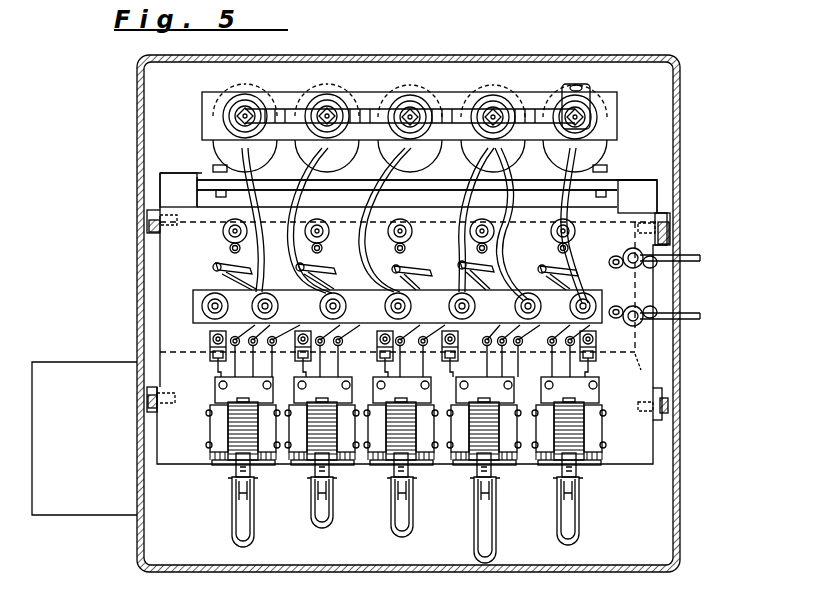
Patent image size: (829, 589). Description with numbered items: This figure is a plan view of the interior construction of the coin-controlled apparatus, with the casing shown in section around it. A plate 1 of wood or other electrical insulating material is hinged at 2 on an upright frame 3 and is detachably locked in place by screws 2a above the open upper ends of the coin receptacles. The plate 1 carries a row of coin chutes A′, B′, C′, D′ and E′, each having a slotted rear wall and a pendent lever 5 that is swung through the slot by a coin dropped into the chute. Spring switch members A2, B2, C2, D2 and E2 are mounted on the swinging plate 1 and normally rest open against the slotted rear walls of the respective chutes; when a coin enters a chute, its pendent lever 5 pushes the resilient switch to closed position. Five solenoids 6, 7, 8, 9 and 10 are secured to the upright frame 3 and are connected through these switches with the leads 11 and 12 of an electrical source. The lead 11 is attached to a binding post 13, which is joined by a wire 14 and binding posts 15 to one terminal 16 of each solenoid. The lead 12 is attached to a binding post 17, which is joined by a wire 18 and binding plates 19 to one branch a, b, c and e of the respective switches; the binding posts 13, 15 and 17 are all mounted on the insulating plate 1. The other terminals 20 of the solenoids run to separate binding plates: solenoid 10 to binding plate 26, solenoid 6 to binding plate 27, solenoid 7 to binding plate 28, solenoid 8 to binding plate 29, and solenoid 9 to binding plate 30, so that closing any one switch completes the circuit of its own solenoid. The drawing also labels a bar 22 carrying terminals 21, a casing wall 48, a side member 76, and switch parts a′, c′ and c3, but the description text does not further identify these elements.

The plate 1 is at (158, 298).
The hinge 2 is at (147, 222).
The screws 2a is at (147, 402).
The upright frame 3 is at (190, 172).
The pendent levers 5 is at (254, 490).
The solenoid 6 is at (422, 95).
The solenoid 7 is at (340, 95).
The solenoid 8 is at (592, 100).
The solenoid 9 is at (258, 94).
The solenoid 10 is at (506, 95).
The lead 11 is at (696, 255).
The lead 12 is at (690, 320).
The binding post 13 is at (633, 268).
The wire 14 is at (622, 222).
The binding posts 15 is at (222, 233).
The terminal 16 is at (250, 170).
The binding post 17 is at (640, 326).
The wire 18 is at (649, 367).
The binding plates 19 is at (210, 344).
The other terminals 20 is at (240, 150).
The terminal 21 is at (385, 312).
The bar 22 is at (200, 290).
The binding plate 26 is at (470, 258).
The binding plate 27 is at (404, 268).
The binding plate 28 is at (330, 264).
The binding plate 29 is at (548, 263).
The binding plate 30 is at (232, 264).
The casing 48 is at (681, 478).
The box 76 is at (70, 362).
The switch branch a is at (214, 372).
The switch branch b is at (300, 370).
The wire a′ is at (388, 370).
The switch branch e is at (452, 370).
The wire c3 is at (540, 370).
The wire c′ is at (566, 372).
The switch branch c is at (576, 376).
The spring switch member D2 is at (240, 440).
The spring switch member B2 is at (322, 445).
The spring switch member A2 is at (402, 445).
The spring switch member E2 is at (484, 448).
The spring switch member C2 is at (566, 448).
The chute D′ is at (236, 525).
The chute B′ is at (320, 528).
The chute A′ is at (398, 537).
The chute E′ is at (474, 540).
The chute C′ is at (580, 535).